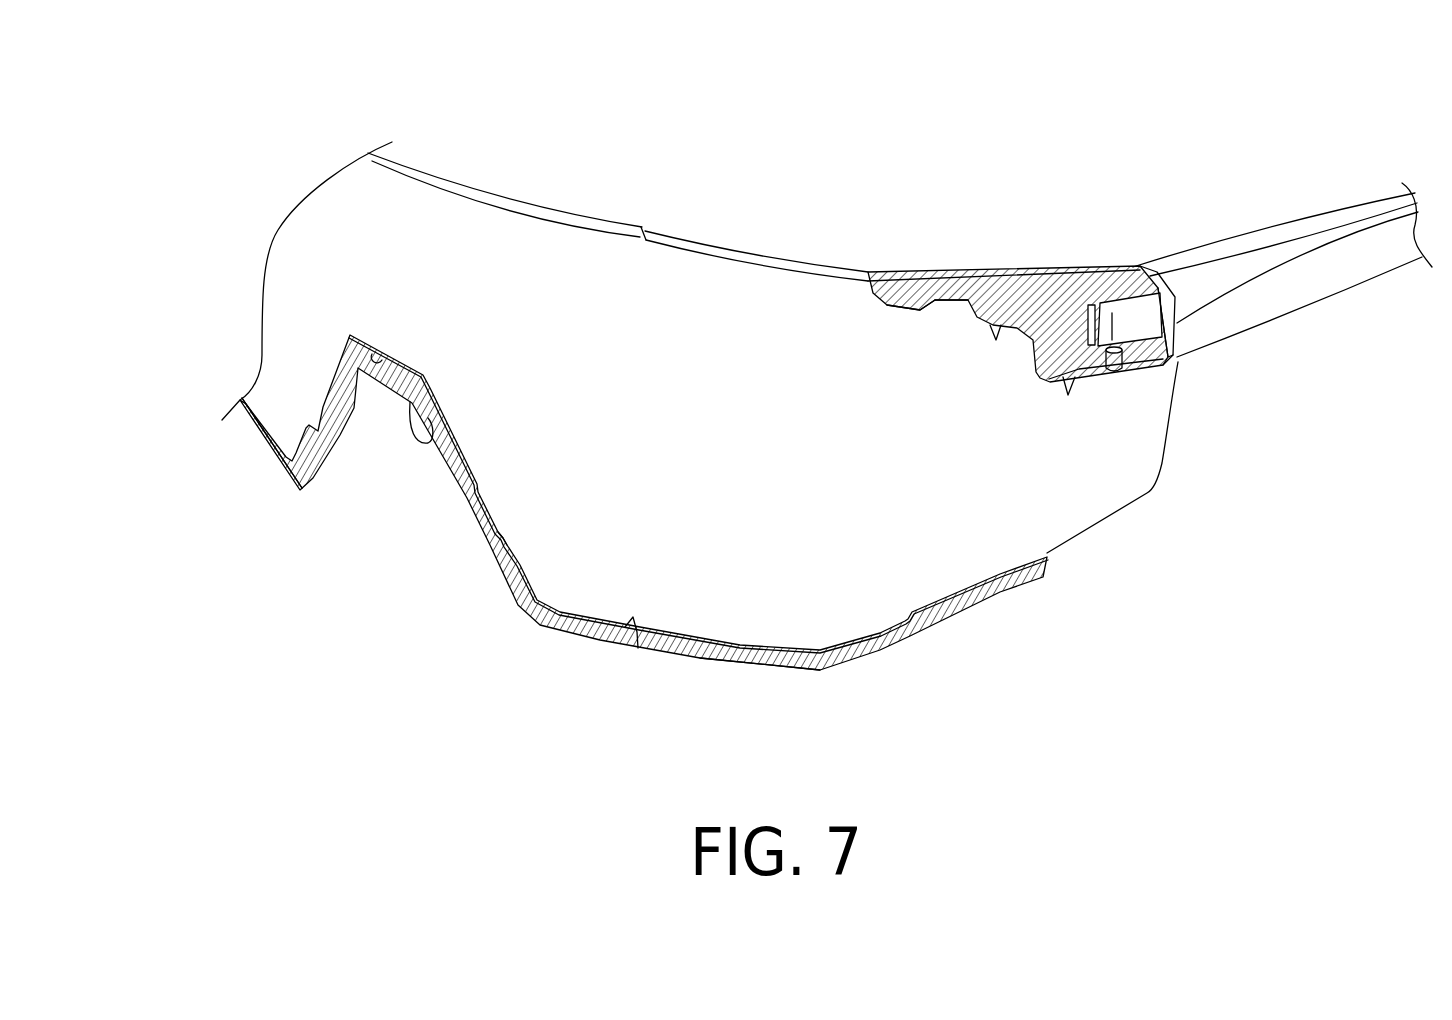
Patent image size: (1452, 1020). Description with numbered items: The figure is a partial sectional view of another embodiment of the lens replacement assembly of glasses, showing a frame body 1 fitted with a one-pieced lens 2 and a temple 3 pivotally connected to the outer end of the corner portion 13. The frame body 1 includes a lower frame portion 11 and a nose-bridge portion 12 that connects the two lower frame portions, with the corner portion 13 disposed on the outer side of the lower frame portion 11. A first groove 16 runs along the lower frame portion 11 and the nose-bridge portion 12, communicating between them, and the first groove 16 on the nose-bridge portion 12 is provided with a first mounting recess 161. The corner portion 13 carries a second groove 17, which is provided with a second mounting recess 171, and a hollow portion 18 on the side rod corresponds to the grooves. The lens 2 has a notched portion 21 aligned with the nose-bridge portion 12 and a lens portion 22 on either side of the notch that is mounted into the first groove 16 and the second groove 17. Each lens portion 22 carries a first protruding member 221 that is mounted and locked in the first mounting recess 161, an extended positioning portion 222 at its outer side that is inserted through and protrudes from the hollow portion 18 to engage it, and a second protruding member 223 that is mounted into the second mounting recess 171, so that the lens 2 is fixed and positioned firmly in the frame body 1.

The frame body 1 is at (344, 562).
The lens 2 is at (665, 192).
The temple 3 is at (1312, 288).
The lower frame portion 11 is at (743, 668).
The nose-bridge portion 12 is at (393, 383).
The corner portion 13 is at (892, 275).
The first groove 16 is at (625, 627).
The second groove 17 is at (1012, 282).
The hollow portion 18 is at (1070, 380).
The notched portion 21 is at (375, 362).
The lens portion 22 is at (820, 603).
The first protruding member 221 is at (317, 413).
The extended positioning portion 222 is at (1137, 453).
The second protruding member 223 is at (953, 297).
The first mounting recess 161 is at (317, 413).
The second mounting recess 171 is at (953, 297).